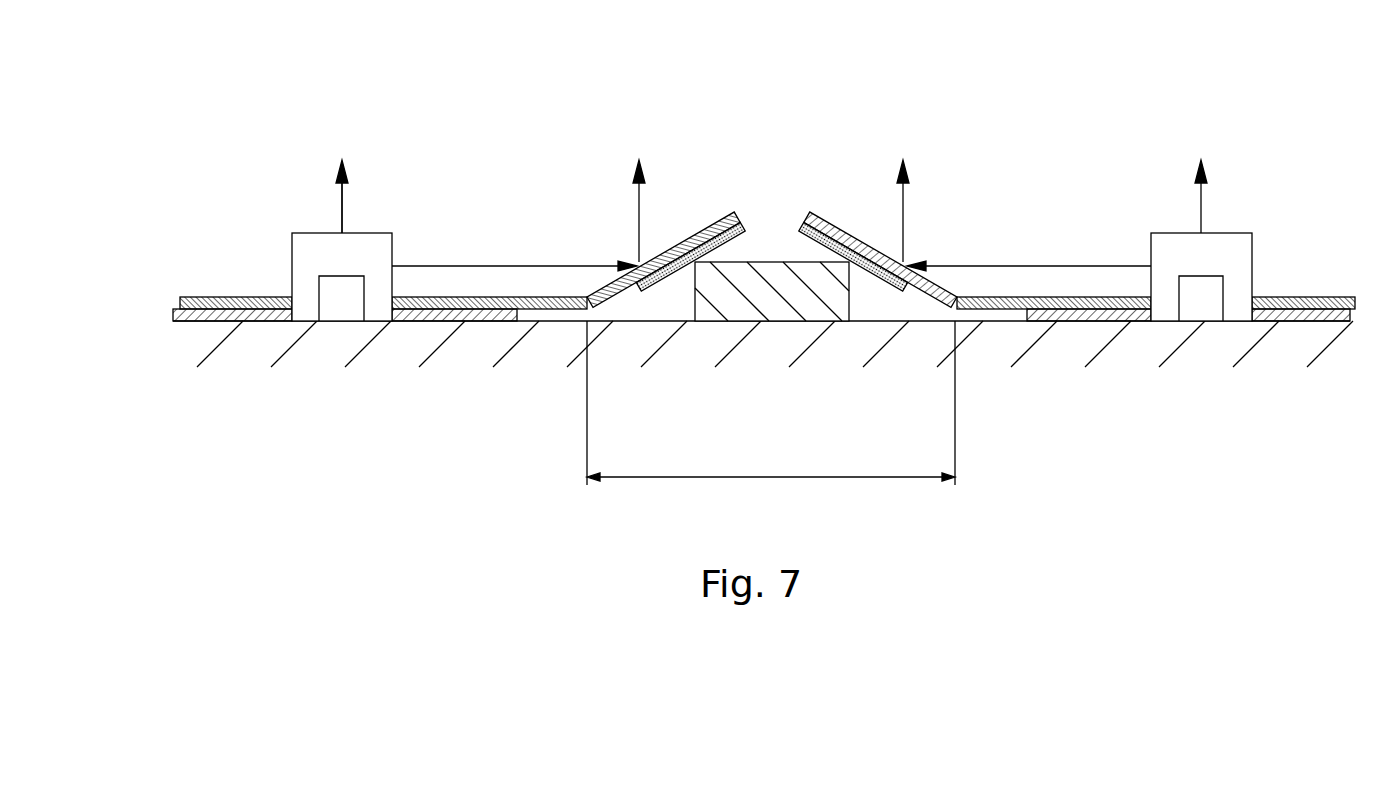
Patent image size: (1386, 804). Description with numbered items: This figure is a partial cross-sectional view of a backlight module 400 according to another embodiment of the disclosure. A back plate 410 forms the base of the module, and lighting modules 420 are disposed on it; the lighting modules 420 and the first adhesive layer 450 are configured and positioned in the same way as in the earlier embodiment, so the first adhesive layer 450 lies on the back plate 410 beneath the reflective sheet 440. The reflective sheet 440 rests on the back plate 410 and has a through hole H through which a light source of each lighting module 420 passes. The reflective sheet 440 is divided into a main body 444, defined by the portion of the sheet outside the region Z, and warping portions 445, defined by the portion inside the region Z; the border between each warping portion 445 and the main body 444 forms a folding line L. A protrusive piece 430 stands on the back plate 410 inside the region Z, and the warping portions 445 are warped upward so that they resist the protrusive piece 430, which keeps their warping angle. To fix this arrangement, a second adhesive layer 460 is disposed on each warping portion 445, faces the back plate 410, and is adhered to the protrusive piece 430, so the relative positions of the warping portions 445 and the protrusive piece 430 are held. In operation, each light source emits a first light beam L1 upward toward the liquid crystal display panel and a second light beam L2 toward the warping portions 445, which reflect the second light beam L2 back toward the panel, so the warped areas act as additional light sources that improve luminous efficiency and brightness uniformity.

The backlight module 400 is at (191, 85).
The back plate 410 is at (1180, 345).
The lighting module 420 is at (1225, 245).
The protrusive piece 430 is at (767, 303).
The reflective sheet 440 is at (1077, 95).
The main body 444 is at (998, 297).
The warping portion 445 is at (827, 222).
The first adhesive layer 450 is at (470, 323).
The second adhesive layer 460 is at (657, 283).
The folding line L is at (585, 292).
The first light beam L1 is at (342, 208).
The second light beam L2 is at (510, 265).
The through hole H is at (1258, 294).
The region Z is at (885, 495).